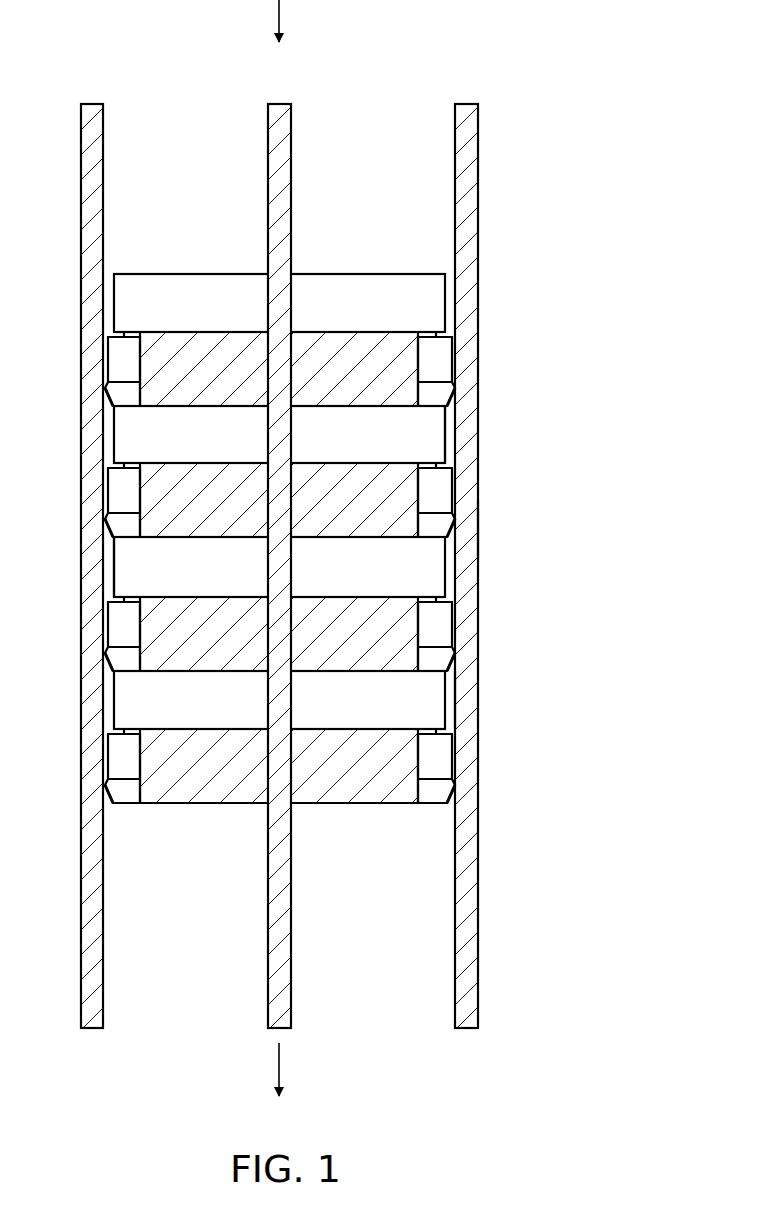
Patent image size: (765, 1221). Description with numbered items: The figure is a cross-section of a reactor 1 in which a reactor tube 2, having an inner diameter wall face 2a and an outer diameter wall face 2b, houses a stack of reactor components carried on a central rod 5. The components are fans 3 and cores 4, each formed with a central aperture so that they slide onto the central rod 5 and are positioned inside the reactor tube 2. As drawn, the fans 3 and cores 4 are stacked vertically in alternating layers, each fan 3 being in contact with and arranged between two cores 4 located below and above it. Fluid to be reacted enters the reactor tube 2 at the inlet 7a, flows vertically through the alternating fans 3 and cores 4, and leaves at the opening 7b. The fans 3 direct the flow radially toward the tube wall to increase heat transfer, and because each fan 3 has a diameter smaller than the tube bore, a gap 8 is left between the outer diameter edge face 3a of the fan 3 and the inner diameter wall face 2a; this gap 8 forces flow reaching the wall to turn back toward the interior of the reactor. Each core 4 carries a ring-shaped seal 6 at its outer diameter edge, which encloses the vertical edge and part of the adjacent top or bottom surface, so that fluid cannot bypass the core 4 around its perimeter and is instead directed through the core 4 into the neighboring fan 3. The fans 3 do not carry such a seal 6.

The reactor 1 is at (538, 227).
The reactor tube 2 is at (475, 505).
The inner diameter wall face 2a is at (453, 716).
The outer diameter wall face 2b is at (480, 520).
The fan 3 is at (433, 445).
The outer diameter edge face of the fan 3a is at (445, 418).
The core 4 is at (405, 358).
The central rod 5 is at (285, 162).
The seal 6 is at (118, 363).
The inlet 7a is at (281, 15).
The opening 7b is at (282, 1068).
The gap 8 is at (110, 567).